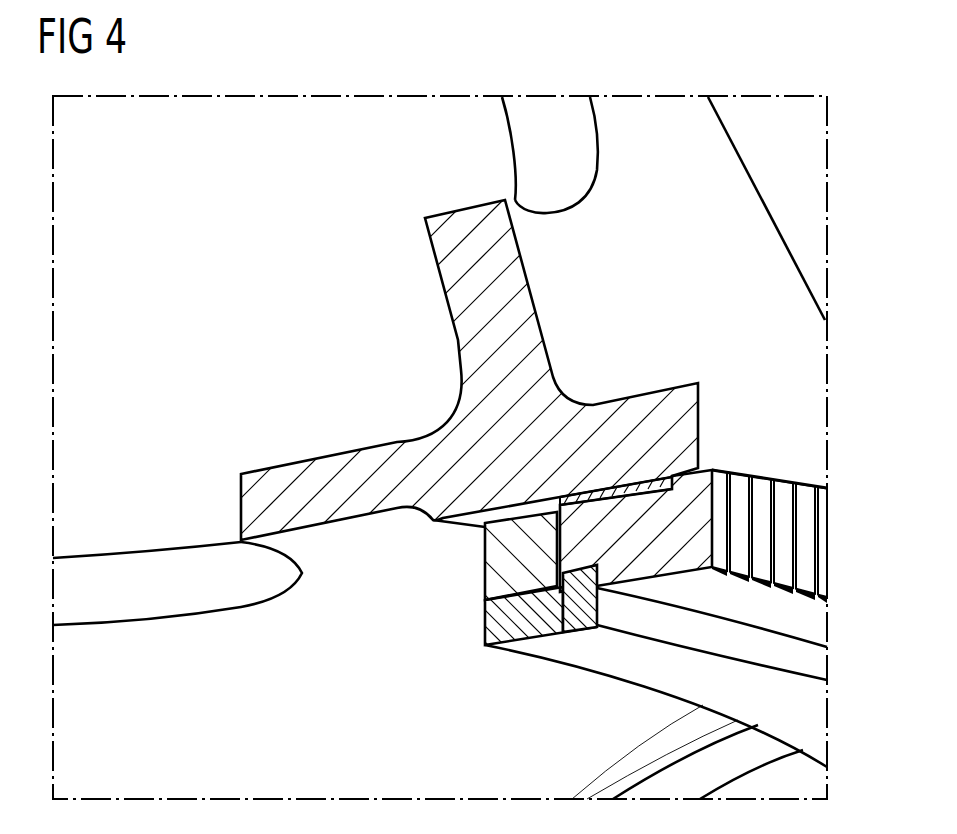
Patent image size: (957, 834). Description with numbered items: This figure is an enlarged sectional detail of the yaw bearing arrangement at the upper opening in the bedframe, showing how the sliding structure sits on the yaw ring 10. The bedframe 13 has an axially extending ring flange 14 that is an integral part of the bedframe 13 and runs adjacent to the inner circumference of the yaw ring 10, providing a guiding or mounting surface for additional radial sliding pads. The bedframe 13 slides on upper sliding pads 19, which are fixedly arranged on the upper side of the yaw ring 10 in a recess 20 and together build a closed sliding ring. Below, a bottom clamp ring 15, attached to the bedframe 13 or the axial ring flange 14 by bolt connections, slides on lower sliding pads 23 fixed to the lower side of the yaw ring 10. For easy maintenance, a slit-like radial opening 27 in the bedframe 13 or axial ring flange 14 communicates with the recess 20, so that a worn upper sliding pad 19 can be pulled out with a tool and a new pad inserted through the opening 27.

The yaw ring 10 is at (812, 621).
The bedframe 13 is at (297, 482).
The axial ring flange 14 is at (512, 560).
The bottom clamp ring 15 is at (540, 613).
The upper sliding pads 19 is at (622, 418).
The recess 20 is at (648, 490).
The lower sliding pads 23 is at (570, 580).
The radial opening 27 is at (470, 522).